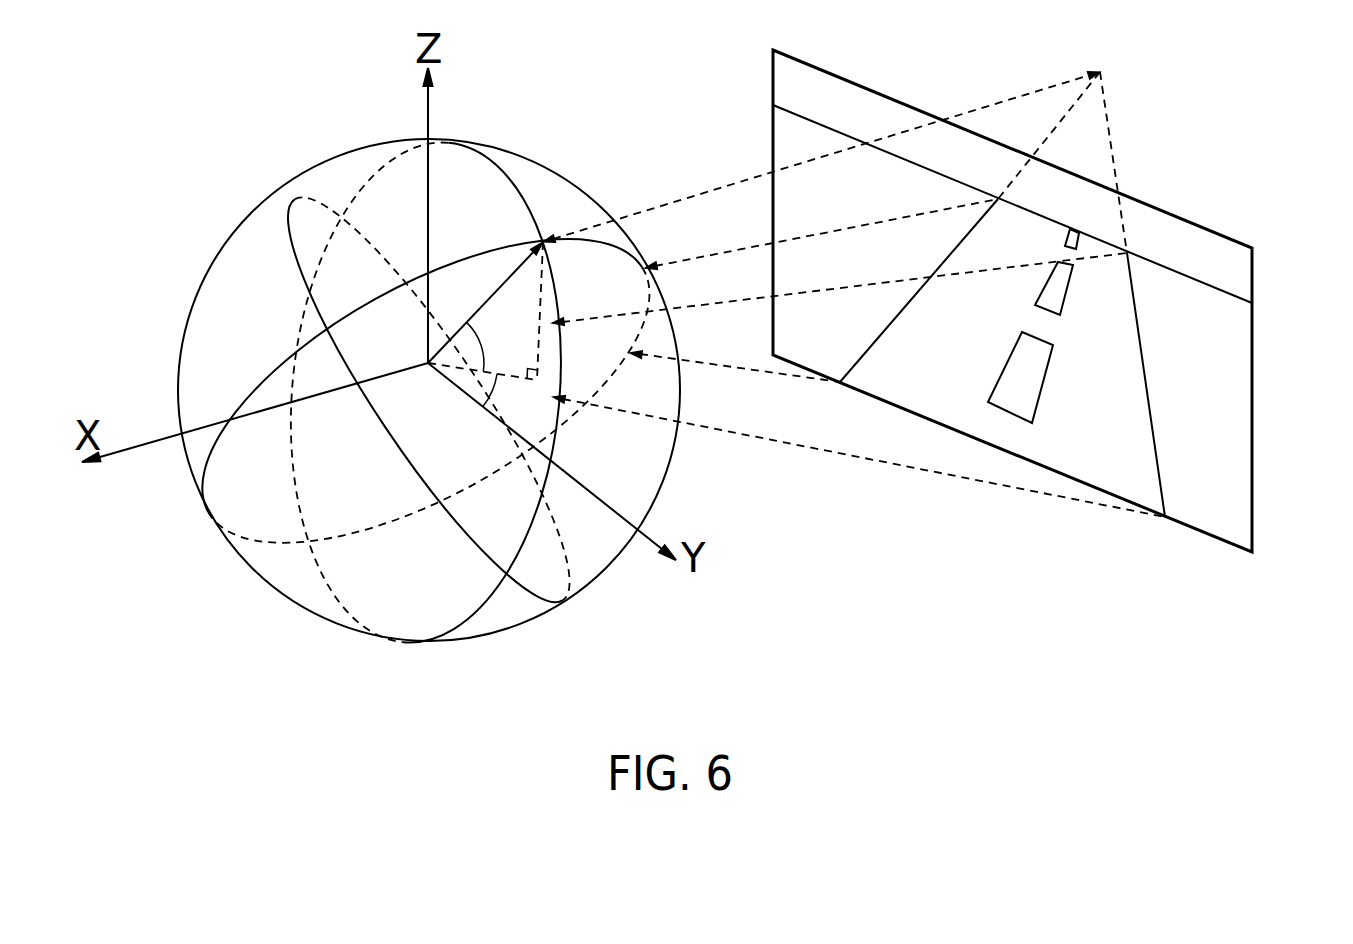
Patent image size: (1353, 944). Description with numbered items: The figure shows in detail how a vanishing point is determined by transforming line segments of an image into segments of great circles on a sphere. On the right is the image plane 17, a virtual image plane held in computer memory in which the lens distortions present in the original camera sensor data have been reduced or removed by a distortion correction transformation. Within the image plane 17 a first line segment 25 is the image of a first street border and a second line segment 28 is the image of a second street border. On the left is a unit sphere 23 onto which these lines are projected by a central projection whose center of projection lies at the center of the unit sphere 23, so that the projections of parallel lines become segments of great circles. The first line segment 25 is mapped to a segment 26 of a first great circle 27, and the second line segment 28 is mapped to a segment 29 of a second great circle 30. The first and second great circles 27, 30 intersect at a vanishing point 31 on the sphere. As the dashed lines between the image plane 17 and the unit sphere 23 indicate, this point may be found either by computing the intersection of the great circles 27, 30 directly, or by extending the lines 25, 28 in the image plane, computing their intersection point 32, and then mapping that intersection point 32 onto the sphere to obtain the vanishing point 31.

The image plane 17 is at (1255, 412).
The unit sphere 23 is at (502, 640).
The first line segment 25 is at (1150, 380).
The segment of first great circle 26 is at (563, 355).
The first great circle 27 is at (266, 547).
The second line segment 28 is at (893, 327).
The segment of second great circle 29 is at (645, 297).
The second great circle 30 is at (488, 161).
The vanishing point 31 is at (546, 236).
The intersection point 32 is at (1102, 70).